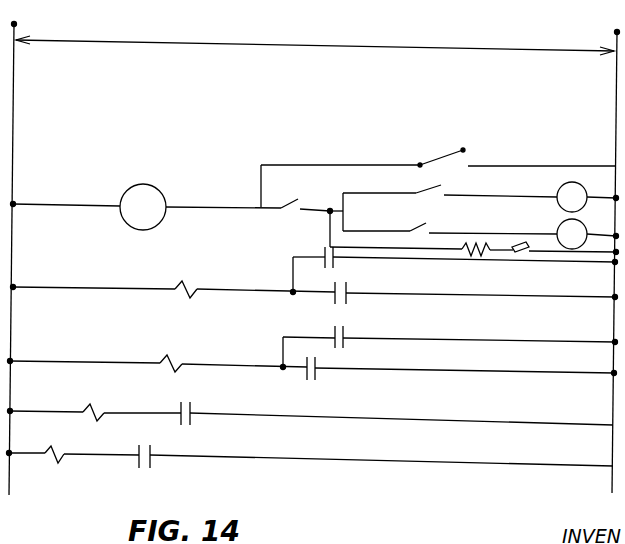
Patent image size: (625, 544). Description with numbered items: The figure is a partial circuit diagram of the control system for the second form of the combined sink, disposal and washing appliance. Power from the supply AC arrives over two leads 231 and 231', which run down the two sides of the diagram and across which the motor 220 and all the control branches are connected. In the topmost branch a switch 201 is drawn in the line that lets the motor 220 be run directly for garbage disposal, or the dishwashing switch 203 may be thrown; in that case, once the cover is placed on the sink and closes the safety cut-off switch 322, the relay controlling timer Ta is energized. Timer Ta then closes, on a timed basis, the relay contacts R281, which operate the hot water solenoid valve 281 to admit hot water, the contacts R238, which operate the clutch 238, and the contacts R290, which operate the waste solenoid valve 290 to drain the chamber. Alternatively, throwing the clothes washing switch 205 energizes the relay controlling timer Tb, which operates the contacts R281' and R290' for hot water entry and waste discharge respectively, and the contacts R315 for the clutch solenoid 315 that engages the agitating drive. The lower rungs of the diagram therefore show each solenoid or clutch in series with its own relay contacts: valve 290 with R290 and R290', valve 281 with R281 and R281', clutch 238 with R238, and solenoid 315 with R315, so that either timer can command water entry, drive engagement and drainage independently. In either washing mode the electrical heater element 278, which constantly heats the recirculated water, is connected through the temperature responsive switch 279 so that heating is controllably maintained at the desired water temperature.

The AC supply AC is at (315, 46).
The lead 231 is at (49, 93).
The lead 231' is at (585, 116).
The motor 220 is at (152, 185).
The safety cut-off switch 322 is at (293, 183).
The switch 203 is at (417, 191).
The switch contact 201 is at (440, 158).
The switch 205 is at (418, 229).
The relay controlling timer Ta is at (572, 197).
The relay controlling timer Tb is at (572, 234).
The temperature responsive switch 279 is at (517, 242).
The electrical heater element 278 is at (473, 256).
The relay contacts R290 is at (292, 251).
The waste solenoid valve 290 is at (191, 279).
The relay contacts R290' is at (378, 288).
The relay contacts R281 is at (375, 332).
The hot water solenoid valve 281 is at (174, 354).
The relay contacts R281' is at (347, 373).
The clutch 238 is at (89, 402).
The relay contacts R238 is at (192, 404).
The clutch solenoid 315 is at (49, 443).
The relay contacts R315 is at (145, 446).